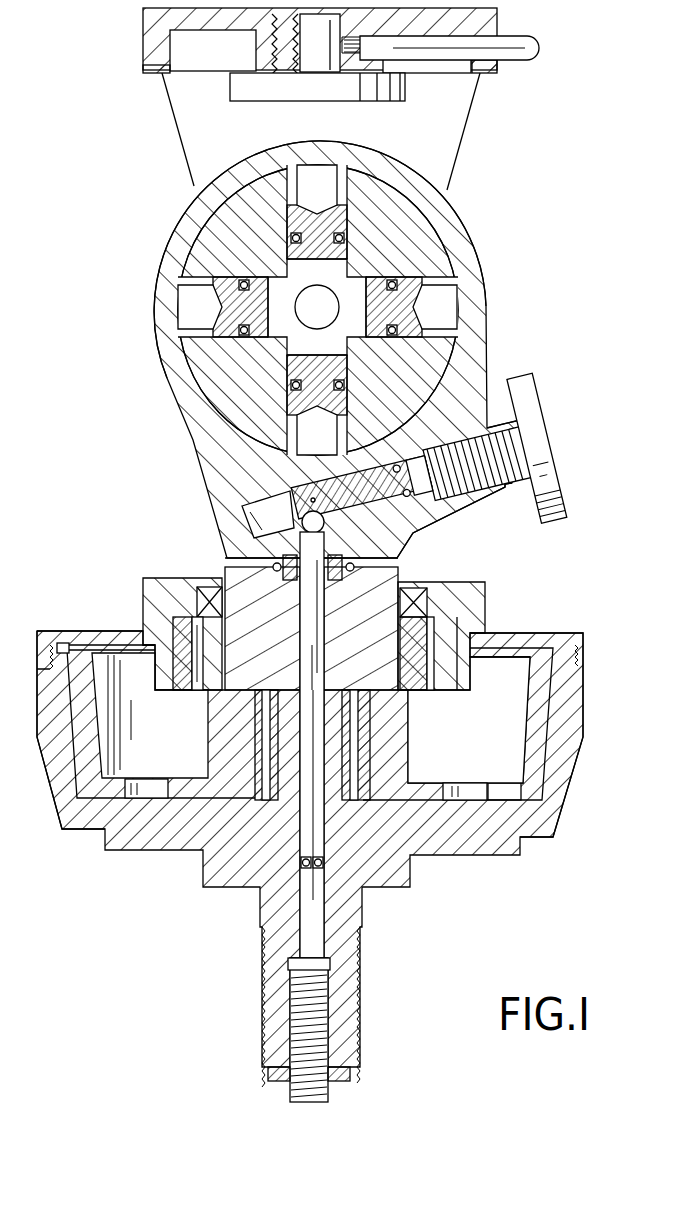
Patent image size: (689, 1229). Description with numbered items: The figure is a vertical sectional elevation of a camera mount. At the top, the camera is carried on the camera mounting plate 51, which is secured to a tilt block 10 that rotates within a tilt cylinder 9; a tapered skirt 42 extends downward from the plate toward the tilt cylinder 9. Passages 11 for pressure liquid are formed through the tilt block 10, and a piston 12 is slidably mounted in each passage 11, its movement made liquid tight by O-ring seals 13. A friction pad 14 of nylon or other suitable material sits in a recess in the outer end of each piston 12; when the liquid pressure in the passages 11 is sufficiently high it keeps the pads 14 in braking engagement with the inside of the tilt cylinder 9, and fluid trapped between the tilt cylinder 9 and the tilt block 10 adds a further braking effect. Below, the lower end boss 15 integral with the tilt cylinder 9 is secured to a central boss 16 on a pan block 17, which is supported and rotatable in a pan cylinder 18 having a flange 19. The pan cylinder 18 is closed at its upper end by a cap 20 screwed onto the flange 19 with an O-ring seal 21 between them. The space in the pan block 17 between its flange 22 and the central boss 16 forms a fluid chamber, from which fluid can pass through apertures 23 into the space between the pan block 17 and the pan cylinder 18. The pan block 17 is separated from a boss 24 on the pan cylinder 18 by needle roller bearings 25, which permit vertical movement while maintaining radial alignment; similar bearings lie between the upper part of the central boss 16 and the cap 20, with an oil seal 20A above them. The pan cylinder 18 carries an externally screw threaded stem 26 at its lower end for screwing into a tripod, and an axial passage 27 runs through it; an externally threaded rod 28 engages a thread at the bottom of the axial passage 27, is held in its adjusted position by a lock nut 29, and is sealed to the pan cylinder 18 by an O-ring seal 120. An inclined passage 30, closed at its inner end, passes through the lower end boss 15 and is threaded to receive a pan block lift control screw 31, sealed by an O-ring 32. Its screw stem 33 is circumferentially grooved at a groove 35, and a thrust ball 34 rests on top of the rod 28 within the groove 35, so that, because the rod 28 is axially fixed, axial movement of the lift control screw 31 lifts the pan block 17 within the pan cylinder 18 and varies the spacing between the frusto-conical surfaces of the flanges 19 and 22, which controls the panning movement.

The tilt cylinder 9 is at (158, 268).
The tilt block 10 is at (432, 365).
The passages 11 is at (440, 300).
The piston 12 is at (345, 205).
The O-ring seals 13 is at (370, 232).
The friction pad 14 is at (318, 180).
The lower end boss 15 is at (215, 482).
The central boss 16 is at (393, 577).
The pan block 17 is at (508, 790).
The pan cylinder 18 is at (60, 795).
The flange 19 is at (50, 694).
The cap 20 is at (150, 597).
The oil seal 20A is at (442, 590).
The O-ring seal 21 is at (63, 643).
The flange 22 is at (88, 683).
The apertures 23 is at (150, 784).
The boss 24 is at (336, 755).
The needle roller bearings 25 is at (262, 705).
The externally screw threaded stem 26 is at (360, 1010).
The axial passage 27 is at (325, 905).
The rod 28 is at (315, 1037).
The lock nut 29 is at (345, 1082).
The inclined passage 30 is at (240, 500).
The pan block lift control screw 31 is at (533, 412).
The O-ring 32 is at (410, 530).
The screw stem 33 is at (475, 455).
The thrust ball 34 is at (301, 522).
The groove 35 is at (313, 497).
The cover 42 is at (452, 133).
The camera mounting plate 51 is at (143, 45).
The O-ring seal 120 is at (300, 862).